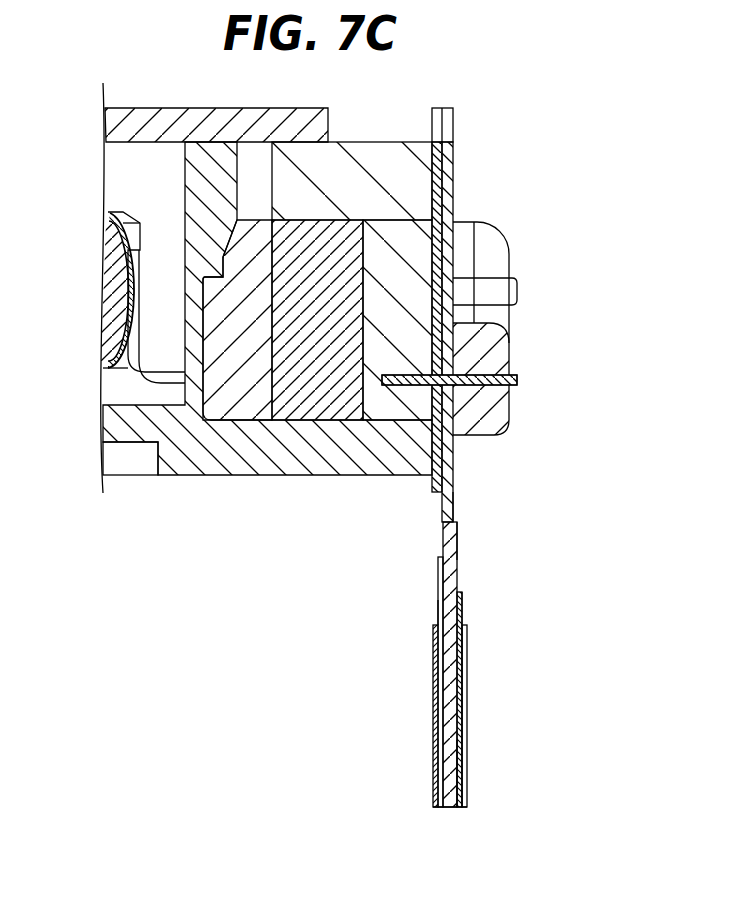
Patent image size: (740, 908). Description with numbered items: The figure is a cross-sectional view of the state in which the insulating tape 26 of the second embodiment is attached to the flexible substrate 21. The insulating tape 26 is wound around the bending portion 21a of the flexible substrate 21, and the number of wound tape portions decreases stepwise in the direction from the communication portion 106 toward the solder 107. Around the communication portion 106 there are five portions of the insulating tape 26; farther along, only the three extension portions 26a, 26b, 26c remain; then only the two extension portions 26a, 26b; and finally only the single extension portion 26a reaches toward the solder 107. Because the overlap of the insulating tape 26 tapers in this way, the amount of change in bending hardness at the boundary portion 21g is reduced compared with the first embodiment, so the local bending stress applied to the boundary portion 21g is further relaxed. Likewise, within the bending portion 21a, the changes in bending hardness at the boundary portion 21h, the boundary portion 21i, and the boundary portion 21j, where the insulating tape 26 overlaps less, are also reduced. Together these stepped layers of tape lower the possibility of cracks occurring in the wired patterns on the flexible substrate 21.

The flexible substrate 21 is at (453, 166).
The bending portion 21a is at (443, 540).
The boundary portion 21g is at (467, 622).
The boundary portion 21h is at (458, 592).
The boundary portion 21i is at (438, 558).
The boundary portion 21j is at (452, 520).
The insulating tape 26 is at (433, 728).
The extension portion 26a is at (457, 542).
The extension portion 26b is at (437, 610).
The extension portion 26c is at (462, 603).
The communication portion 106 is at (445, 765).
The solder 107 is at (510, 250).